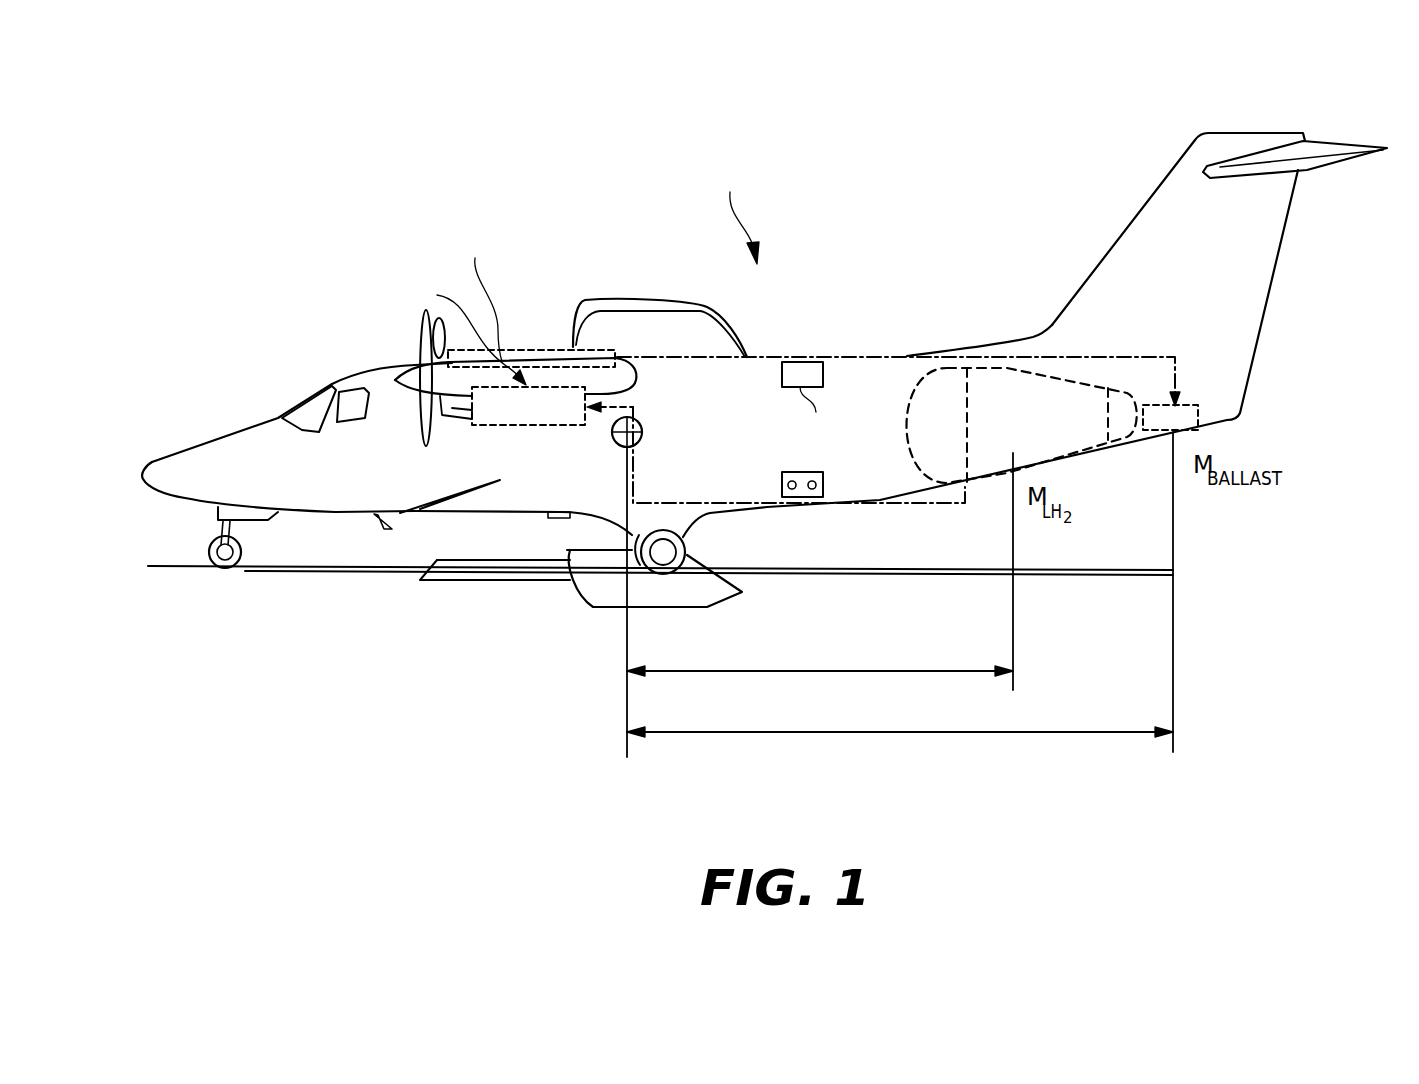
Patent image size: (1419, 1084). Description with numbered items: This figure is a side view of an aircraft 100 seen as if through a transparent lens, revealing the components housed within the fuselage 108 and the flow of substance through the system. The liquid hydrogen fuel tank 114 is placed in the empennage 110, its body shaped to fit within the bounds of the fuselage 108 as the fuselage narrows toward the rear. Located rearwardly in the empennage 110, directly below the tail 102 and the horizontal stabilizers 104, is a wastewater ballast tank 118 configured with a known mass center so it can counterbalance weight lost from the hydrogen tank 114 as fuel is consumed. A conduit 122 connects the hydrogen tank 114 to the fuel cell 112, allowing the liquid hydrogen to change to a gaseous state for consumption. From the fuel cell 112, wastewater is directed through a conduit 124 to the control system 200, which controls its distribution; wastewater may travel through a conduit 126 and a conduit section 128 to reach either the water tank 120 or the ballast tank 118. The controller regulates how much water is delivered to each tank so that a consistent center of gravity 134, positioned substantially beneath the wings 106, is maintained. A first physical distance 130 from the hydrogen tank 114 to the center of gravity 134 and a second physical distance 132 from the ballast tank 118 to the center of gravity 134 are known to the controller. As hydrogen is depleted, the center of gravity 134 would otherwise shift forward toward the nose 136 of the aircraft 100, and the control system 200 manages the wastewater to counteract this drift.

The aircraft 100 is at (738, 211).
The tail 102 is at (1278, 217).
The horizontal stabilizers 104 is at (1345, 148).
The wings 106 is at (643, 302).
The fuselage 108 is at (427, 510).
The empennage 110 is at (1143, 490).
The fuel cell 112 is at (527, 425).
The liquid hydrogen fuel tank 114 is at (1013, 387).
The wastewater ballast tank 118 is at (1200, 419).
The water tank 120 is at (801, 362).
The conduit 122 is at (886, 503).
The conduit 124 is at (463, 333).
The conduit 126 is at (748, 356).
The conduit section 128 is at (907, 356).
The first physical distance 130 is at (688, 672).
The second physical distance 132 is at (935, 733).
The center of gravity 134 is at (622, 443).
The nose 136 is at (182, 468).
The control system 200 is at (510, 350).